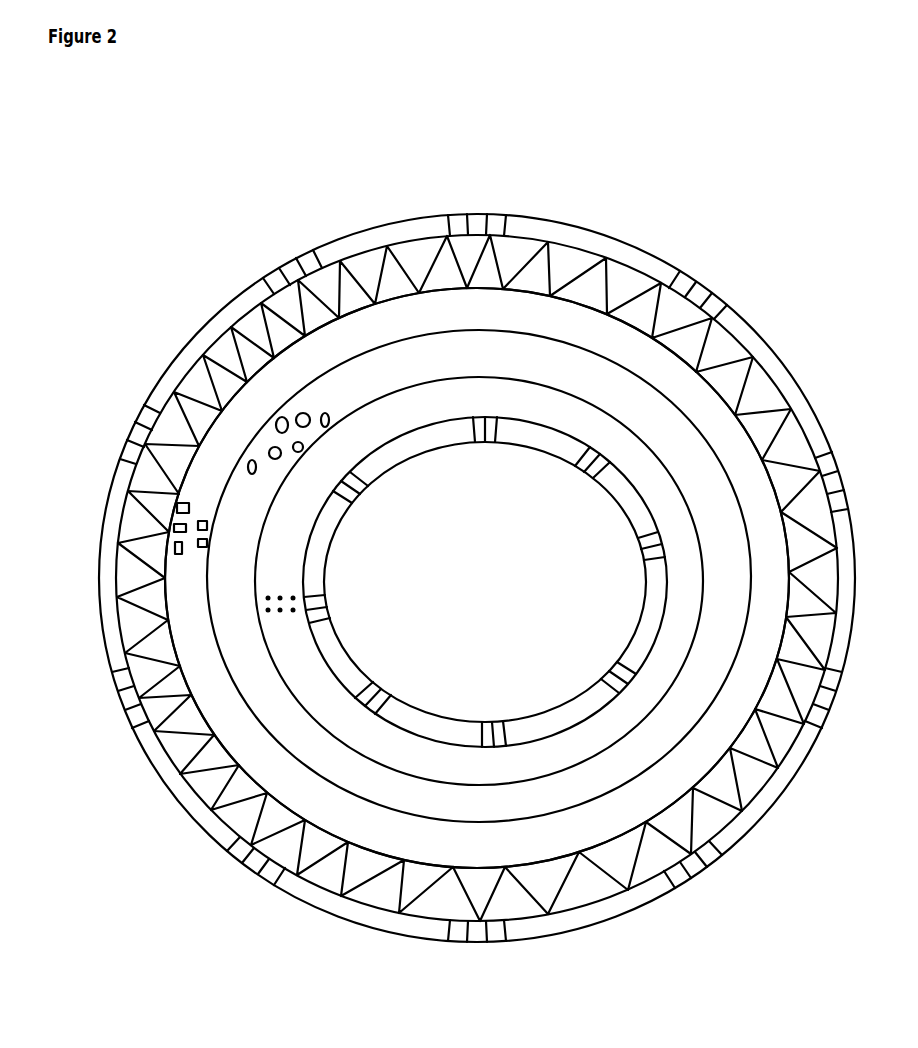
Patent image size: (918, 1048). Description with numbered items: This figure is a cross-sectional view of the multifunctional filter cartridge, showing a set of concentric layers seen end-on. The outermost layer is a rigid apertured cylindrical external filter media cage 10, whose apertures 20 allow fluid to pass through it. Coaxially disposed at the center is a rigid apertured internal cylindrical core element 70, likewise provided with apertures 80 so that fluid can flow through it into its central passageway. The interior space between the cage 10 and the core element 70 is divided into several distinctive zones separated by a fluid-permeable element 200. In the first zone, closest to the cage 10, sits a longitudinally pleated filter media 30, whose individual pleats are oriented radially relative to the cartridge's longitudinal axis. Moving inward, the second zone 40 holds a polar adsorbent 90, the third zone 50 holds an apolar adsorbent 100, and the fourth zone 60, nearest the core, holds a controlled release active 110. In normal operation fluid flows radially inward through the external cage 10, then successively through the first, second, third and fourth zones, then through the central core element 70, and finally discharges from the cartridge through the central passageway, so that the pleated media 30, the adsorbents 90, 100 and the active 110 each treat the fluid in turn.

The external filter media cage 10 is at (343, 905).
The apertures 20 is at (455, 227).
The longitudinally pleated filter media 30 is at (608, 312).
The second zone 40 is at (762, 641).
The third zone 50 is at (702, 680).
The fourth zone 60 is at (628, 723).
The internal cylindrical core element 70 is at (530, 732).
The apertures 80 is at (372, 700).
The polar adsorbent 90 is at (170, 527).
The apolar adsorbent 100 is at (283, 418).
The controlled release active 110 is at (268, 598).
The fluid-permeable element 200 is at (343, 418).